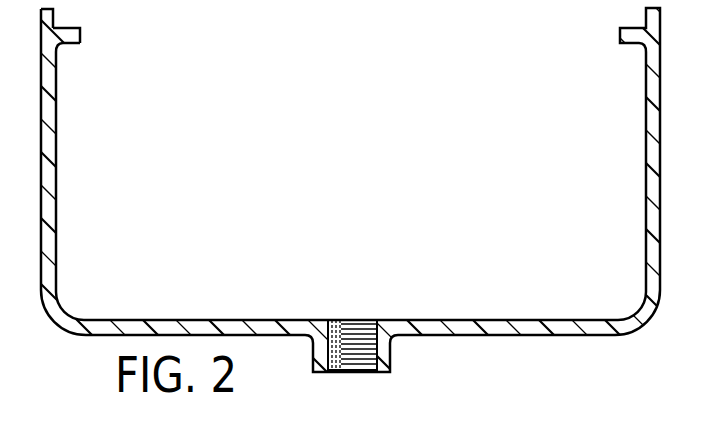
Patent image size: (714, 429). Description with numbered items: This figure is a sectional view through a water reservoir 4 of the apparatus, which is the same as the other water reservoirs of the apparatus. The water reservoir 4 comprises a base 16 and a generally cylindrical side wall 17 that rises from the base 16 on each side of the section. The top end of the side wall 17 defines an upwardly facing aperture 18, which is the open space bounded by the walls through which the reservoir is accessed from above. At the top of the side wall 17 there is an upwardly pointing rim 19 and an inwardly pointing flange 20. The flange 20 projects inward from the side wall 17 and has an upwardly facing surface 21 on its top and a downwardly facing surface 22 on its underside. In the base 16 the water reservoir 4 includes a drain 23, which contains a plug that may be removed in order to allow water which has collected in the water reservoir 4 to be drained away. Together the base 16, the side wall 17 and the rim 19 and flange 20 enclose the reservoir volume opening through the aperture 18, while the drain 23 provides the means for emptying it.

The water reservoir 4 is at (283, 92).
The base 16 is at (218, 320).
The side wall 17 is at (57, 187).
The upwardly facing aperture 18 is at (356, 97).
The upwardly pointing rim 19 is at (58, 11).
The inwardly pointing flange 20 is at (78, 42).
The upwardly facing surface 21 is at (72, 29).
The downwardly facing surface 22 is at (70, 48).
The drain 23 is at (359, 308).